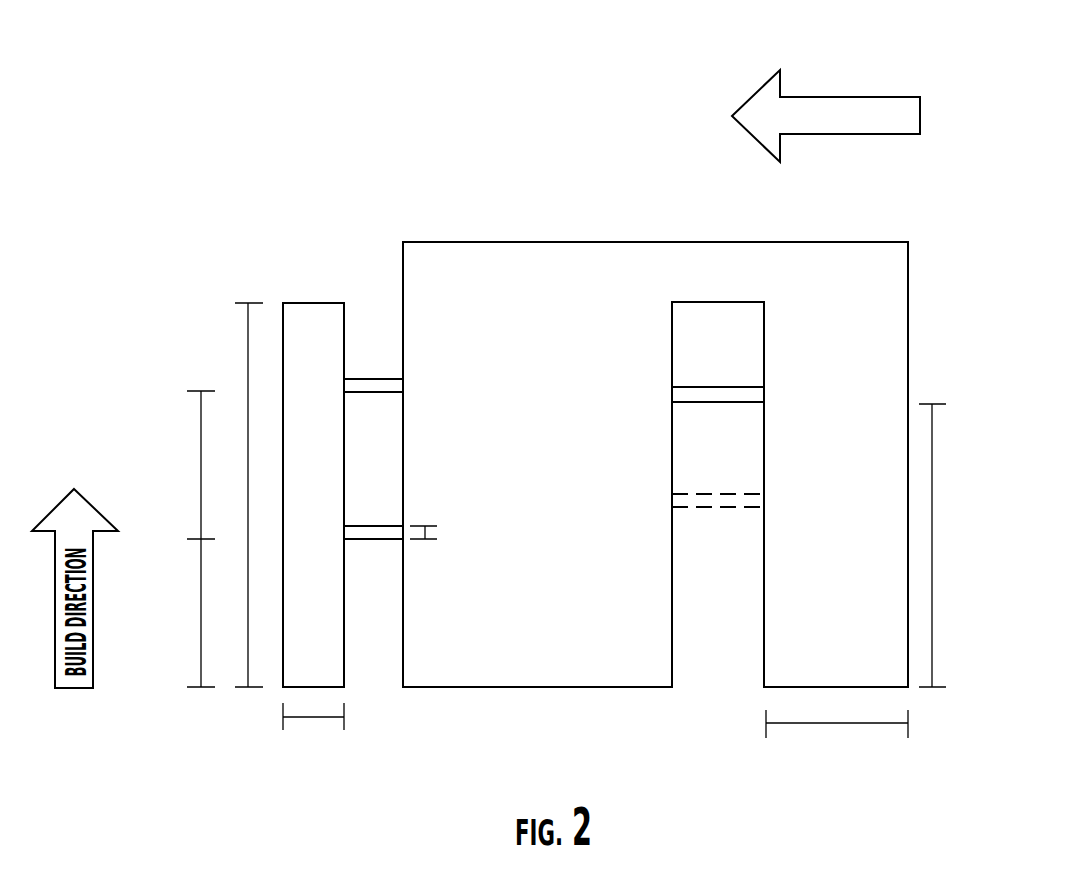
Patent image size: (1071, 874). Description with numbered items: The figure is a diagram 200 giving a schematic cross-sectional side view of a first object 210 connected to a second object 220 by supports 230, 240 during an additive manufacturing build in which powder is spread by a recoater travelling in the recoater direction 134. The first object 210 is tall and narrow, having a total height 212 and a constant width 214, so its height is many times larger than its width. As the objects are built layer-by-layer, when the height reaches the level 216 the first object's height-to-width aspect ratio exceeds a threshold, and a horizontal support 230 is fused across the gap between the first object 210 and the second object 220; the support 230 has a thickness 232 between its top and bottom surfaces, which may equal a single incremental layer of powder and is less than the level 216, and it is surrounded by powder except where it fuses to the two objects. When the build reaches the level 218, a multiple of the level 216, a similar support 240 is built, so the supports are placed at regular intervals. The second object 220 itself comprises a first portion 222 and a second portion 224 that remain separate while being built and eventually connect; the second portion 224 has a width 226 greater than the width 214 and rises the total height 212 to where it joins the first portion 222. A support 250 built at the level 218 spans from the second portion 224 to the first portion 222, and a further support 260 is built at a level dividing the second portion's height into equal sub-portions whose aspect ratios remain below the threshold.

The diagram 200 is at (290, 67).
The recoater direction 134 is at (852, 97).
The first object 210 is at (303, 300).
The total height 212 is at (248, 359).
The width 214 is at (314, 717).
The level 216 is at (201, 613).
The level 218 is at (201, 483).
The second object 220 is at (511, 242).
The first portion 222 is at (553, 688).
The second portion 224 is at (764, 635).
The width 226 is at (845, 723).
The support 230 is at (367, 524).
The thickness 232 is at (437, 532).
The support 240 is at (368, 378).
The support 250 is at (706, 388).
The support 260 is at (706, 492).